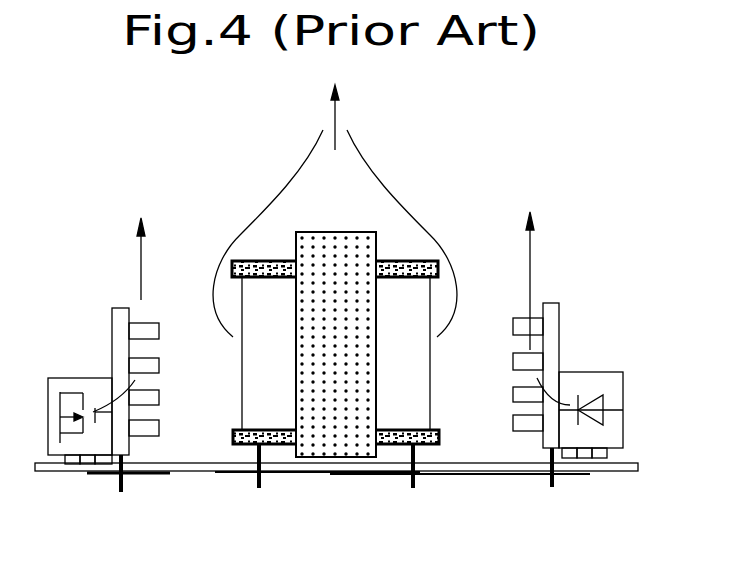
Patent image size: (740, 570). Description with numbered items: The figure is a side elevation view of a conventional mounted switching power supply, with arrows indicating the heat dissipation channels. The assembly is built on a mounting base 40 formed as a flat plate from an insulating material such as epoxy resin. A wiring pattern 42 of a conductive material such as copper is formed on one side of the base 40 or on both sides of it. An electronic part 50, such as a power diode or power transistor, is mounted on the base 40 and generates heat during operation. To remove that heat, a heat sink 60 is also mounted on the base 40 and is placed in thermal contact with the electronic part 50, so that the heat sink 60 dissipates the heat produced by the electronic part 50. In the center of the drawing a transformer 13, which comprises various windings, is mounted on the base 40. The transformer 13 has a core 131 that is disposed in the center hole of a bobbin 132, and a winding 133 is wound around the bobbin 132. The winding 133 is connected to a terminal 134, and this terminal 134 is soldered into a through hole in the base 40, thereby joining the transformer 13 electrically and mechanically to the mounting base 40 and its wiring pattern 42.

The transformer 13 is at (412, 265).
The core 131 is at (345, 230).
The bobbin 132 is at (407, 260).
The winding 133 is at (430, 363).
The terminal 134 is at (412, 450).
The mounting base 40 is at (205, 475).
The wiring pattern 42 is at (173, 476).
The electronic part 50 is at (608, 387).
The heat sink 60 is at (548, 308).